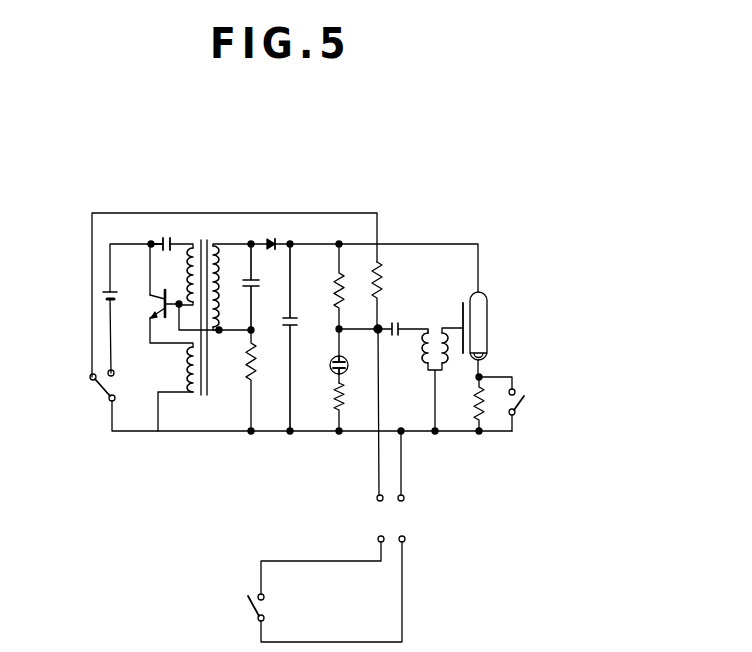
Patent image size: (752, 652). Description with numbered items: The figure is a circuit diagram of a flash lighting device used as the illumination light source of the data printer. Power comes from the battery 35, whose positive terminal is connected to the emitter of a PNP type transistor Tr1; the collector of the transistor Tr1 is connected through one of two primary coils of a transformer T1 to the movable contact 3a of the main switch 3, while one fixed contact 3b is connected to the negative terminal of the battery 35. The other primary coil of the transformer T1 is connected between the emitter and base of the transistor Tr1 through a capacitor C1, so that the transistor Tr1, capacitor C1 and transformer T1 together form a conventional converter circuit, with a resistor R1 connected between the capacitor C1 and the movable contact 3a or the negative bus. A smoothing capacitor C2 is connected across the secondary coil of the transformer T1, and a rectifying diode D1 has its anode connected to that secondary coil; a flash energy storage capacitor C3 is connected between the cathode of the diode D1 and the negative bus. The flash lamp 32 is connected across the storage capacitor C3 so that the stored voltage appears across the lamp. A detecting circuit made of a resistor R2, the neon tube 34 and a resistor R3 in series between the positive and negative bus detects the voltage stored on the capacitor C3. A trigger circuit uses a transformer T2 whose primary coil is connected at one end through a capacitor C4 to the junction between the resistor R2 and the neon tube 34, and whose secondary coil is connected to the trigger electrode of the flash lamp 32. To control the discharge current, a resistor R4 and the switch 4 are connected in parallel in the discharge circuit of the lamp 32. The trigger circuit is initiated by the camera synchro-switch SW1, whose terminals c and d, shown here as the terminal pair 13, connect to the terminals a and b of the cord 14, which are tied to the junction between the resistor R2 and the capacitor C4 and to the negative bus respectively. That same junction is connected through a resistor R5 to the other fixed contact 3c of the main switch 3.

The battery 35 is at (108, 292).
The main switch 3 is at (105, 391).
The movable contact 3a is at (115, 398).
The fixed contact 3b is at (114, 374).
The fixed contact 3c is at (91, 379).
The neon tube 34 is at (327, 356).
The flash lamp 32 is at (485, 300).
The exposure value selector 4 is at (518, 404).
The data exposure initiating switch cord 14 is at (391, 493).
The terminals c, d 13 is at (392, 543).
The synchro-switch SW1 is at (248, 603).
The capacitor C1 is at (165, 236).
The smoothing capacitor C2 is at (262, 287).
The flash energy storage capacitor C3 is at (301, 337).
The capacitor C4 is at (383, 344).
The resistor R1 is at (263, 380).
The resistor R2 is at (351, 286).
The resistor R3 is at (351, 408).
The resistor R4 is at (468, 405).
The resistor R5 is at (389, 297).
The transformer T1 is at (195, 243).
The transformer T2 is at (442, 368).
The rectifying diode D1 is at (271, 238).
The PNP type transistor Tr1 is at (153, 305).